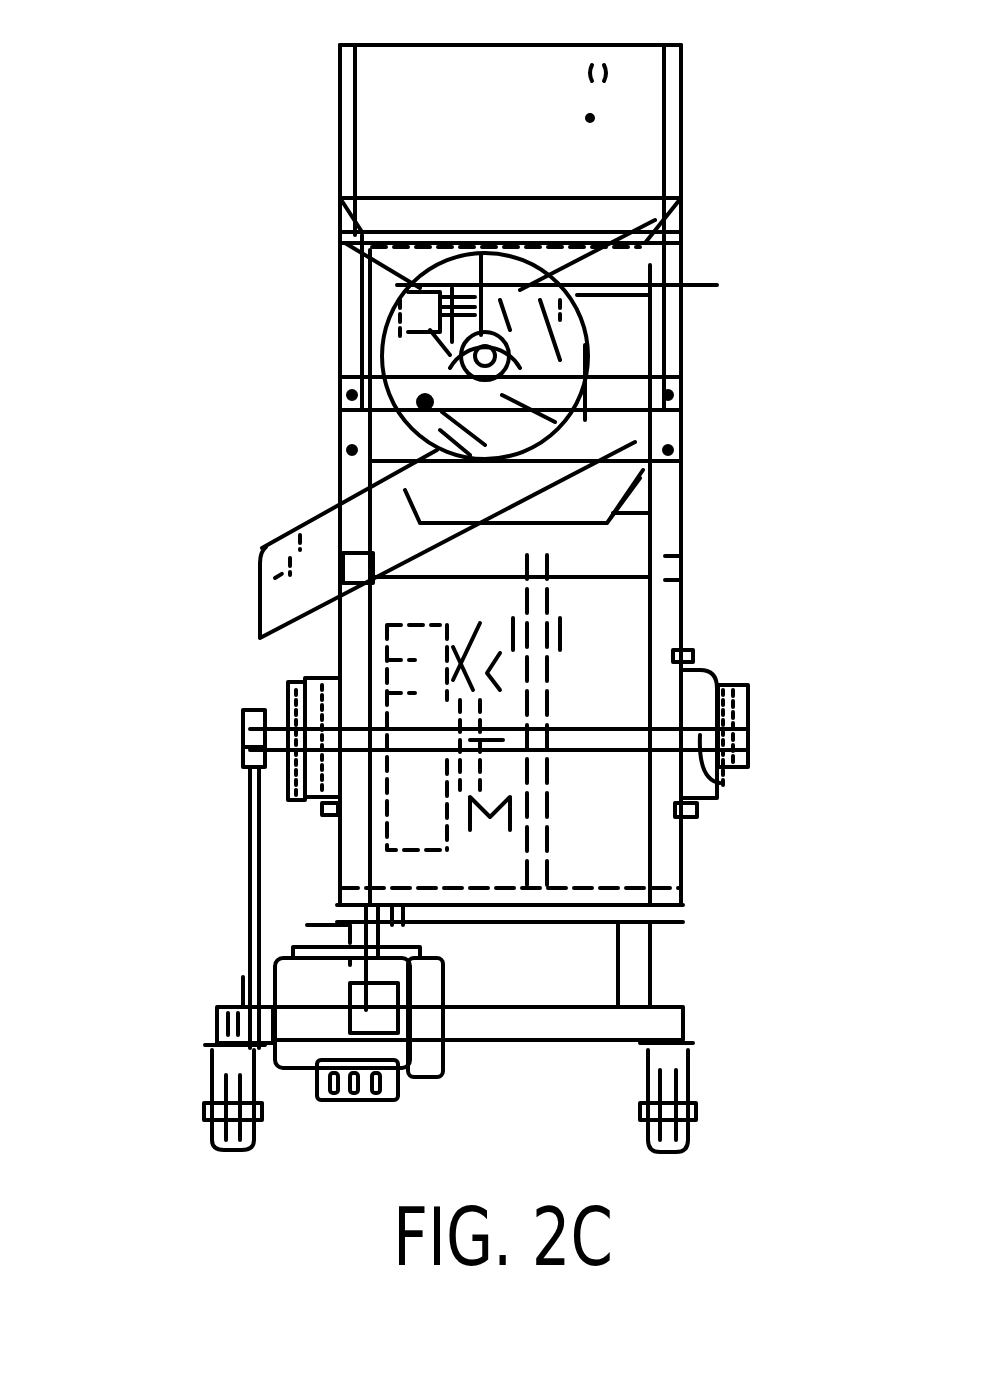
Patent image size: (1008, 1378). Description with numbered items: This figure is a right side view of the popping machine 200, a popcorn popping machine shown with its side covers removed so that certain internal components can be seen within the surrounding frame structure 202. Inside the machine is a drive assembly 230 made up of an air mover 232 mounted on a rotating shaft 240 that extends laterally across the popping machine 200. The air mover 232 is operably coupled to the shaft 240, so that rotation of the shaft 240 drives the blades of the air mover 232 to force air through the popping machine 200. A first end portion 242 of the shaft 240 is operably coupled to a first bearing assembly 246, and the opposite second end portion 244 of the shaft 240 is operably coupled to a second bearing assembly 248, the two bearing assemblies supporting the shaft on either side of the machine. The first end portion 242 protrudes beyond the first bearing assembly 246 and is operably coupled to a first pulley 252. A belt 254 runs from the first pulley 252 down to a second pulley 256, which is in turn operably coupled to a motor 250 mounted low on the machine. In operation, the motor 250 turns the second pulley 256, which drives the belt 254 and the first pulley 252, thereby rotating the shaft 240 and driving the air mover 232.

The popping machine 200 is at (258, 168).
The frame 202 is at (685, 507).
The drive assembly 230 is at (473, 850).
The air mover 232 is at (459, 683).
The shaft 240 is at (603, 750).
The first end portion 242 is at (263, 726).
The second end portion 244 is at (718, 785).
The first bearing assembly 246 is at (325, 690).
The second bearing assembly 248 is at (701, 688).
The motor 250 is at (305, 1053).
The first pulley 252 is at (248, 758).
The belt 254 is at (250, 878).
The second pulley 256 is at (243, 977).